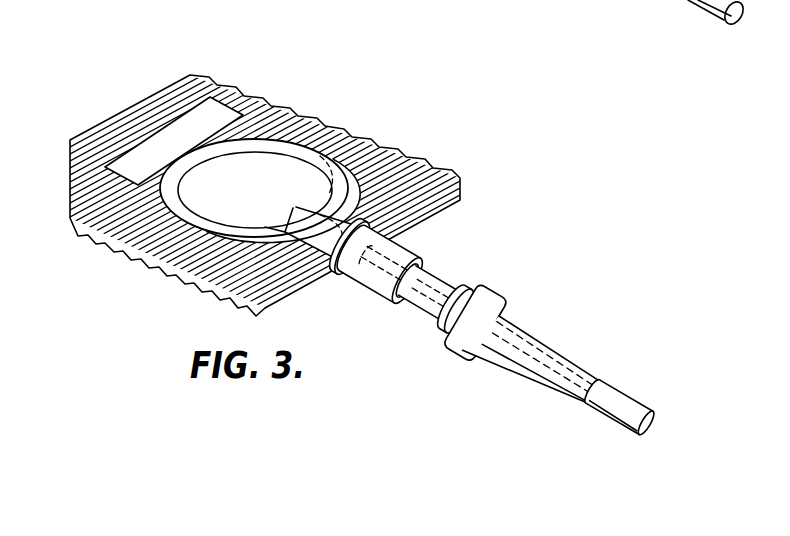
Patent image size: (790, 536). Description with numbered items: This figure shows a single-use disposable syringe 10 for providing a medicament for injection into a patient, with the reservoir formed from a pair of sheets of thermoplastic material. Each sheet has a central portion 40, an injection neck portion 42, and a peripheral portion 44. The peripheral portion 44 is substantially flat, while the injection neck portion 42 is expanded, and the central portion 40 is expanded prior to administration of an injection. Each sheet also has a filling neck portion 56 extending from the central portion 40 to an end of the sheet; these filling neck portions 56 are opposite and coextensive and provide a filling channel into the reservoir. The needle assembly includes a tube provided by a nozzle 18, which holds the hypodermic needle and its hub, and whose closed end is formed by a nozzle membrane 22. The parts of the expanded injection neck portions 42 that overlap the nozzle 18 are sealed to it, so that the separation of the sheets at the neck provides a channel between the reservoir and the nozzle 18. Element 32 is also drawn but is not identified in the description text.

The single-use disposable syringe 10 is at (361, 228).
The nozzle 18 is at (412, 243).
The nozzle membrane 22 is at (356, 215).
The cord / pin element 32 is at (732, 22).
The central portion 40 is at (255, 150).
The injection neck portion 42 is at (309, 194).
The peripheral portion 44 is at (175, 207).
The filling neck portion 56 is at (183, 130).